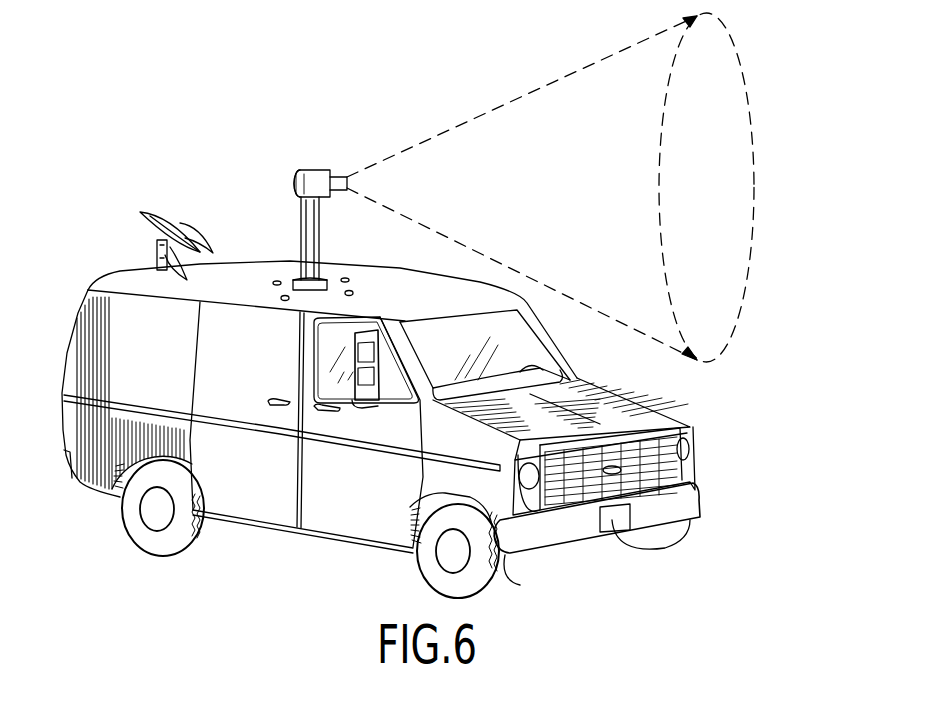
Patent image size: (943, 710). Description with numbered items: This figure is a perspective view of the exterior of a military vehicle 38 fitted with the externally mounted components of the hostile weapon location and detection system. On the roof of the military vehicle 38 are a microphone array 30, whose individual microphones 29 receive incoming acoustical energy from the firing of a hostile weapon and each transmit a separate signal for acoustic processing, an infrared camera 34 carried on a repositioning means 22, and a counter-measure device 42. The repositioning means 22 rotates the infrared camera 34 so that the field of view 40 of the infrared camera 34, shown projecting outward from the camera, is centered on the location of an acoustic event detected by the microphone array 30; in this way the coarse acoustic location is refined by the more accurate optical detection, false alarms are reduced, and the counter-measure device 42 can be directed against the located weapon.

The repositioning means 22 is at (297, 277).
The microphone 29 is at (284, 301).
The microphone array 30 is at (353, 293).
The infrared camera 34 is at (307, 172).
The military vehicle 38 is at (381, 429).
The field of view 40 is at (744, 292).
The counter-measure device 42 is at (180, 224).